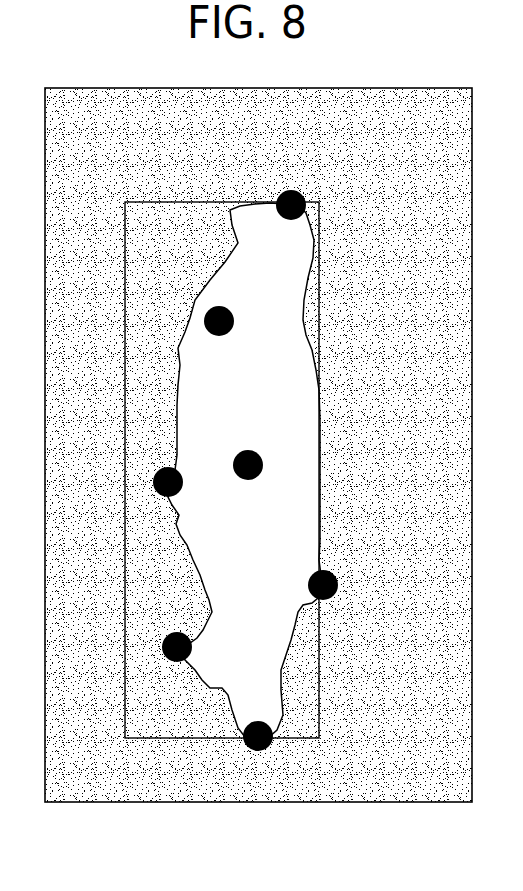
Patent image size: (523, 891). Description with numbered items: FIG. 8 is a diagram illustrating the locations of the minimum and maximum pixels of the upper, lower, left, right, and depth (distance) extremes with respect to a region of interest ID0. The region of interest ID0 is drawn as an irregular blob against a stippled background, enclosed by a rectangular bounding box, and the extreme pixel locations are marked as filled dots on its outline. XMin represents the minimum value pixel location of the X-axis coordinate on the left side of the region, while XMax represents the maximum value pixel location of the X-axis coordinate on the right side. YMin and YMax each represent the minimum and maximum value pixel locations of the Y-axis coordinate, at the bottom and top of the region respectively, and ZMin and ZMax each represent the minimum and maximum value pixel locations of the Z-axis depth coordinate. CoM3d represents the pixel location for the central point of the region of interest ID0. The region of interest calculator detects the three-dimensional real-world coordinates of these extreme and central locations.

The region of interest ID0 is at (245, 436).
The maximum value pixel location of the Y-axis coordinate YMax is at (291, 205).
The minimum value pixel location of the Z-axis coordinate ZMin is at (219, 321).
The pixel location for the central point of the region of interest CoM3d is at (248, 465).
The minimum value pixel location of the X-axis coordinate XMin is at (168, 482).
The maximum value pixel location of the X-axis coordinate XMax is at (323, 585).
The maximum value pixel location of the Z-axis coordinate ZMax is at (177, 647).
The minimum value pixel location of the Y-axis coordinate YMin is at (258, 736).